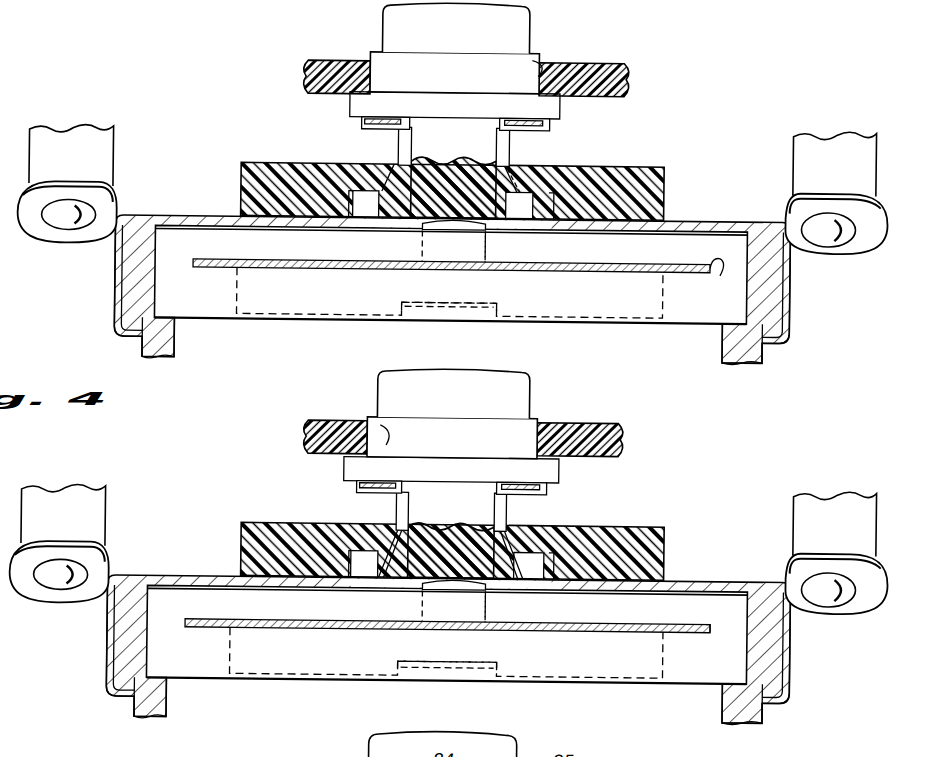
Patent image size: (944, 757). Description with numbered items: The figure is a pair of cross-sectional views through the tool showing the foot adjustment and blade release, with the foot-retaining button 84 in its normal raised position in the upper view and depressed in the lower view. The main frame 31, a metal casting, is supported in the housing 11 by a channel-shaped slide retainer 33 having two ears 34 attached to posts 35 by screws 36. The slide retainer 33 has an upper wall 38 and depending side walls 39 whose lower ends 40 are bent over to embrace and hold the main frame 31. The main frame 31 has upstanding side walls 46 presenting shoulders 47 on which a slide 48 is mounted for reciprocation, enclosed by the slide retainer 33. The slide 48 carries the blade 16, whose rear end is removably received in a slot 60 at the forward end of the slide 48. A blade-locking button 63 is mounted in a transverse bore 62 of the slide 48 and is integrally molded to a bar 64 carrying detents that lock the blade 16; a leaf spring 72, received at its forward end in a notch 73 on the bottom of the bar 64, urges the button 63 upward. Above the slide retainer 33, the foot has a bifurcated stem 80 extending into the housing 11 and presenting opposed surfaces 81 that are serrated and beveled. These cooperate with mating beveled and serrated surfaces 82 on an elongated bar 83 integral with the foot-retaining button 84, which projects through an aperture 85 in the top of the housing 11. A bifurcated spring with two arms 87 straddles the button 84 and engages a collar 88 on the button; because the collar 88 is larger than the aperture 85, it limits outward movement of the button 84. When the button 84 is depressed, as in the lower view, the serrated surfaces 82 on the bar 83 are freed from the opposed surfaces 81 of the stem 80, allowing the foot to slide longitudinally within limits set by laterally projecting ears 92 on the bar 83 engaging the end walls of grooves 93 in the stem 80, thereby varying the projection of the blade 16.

In FIG. 4, the housing 11 is at (631, 66).
In FIG. 5, the housing 11 is at (631, 431).
In FIG. 4, the blade 16 is at (585, 270).
In FIG. 5, the blade 16 is at (585, 631).
In FIG. 4, the main frame 31 is at (178, 348).
In FIG. 5, the main frame 31 is at (170, 710).
In FIG. 4, the channel-shaped slide retainer 33 is at (185, 215).
In FIG. 5, the channel-shaped slide retainer 33 is at (183, 575).
In FIG. 4, the ears 34 is at (75, 187).
In FIG. 5, the ears 34 is at (95, 548).
In FIG. 4, the posts 35 is at (80, 136).
In FIG. 5, the posts 35 is at (68, 506).
In FIG. 4, the screws 36 is at (60, 223).
In FIG. 5, the screws 36 is at (55, 586).
In FIG. 4, the upper wall 38 is at (282, 232).
In FIG. 5, the upper wall 38 is at (250, 596).
In FIG. 4, the side walls 39 is at (113, 297).
In FIG. 5, the side walls 39 is at (107, 652).
In FIG. 4, the lower ends 40 is at (127, 340).
In FIG. 5, the lower ends 40 is at (109, 699).
In FIG. 4, the upstanding side walls 46 is at (158, 362).
In FIG. 5, the upstanding side walls 46 is at (148, 721).
In FIG. 4, the shoulders 47 is at (158, 322).
In FIG. 5, the shoulders 47 is at (168, 681).
In FIG. 4, the slide 48 is at (285, 323).
In FIG. 5, the slide 48 is at (333, 683).
In FIG. 4, the slot 60 is at (716, 262).
In FIG. 5, the slot 60 is at (660, 604).
In FIG. 4, the transverse bore 62 is at (486, 250).
In FIG. 5, the transverse bore 62 is at (486, 608).
In FIG. 4, the blade-locking button 63 is at (440, 233).
In FIG. 5, the blade-locking button 63 is at (440, 593).
In FIG. 4, the bar 64 is at (610, 322).
In FIG. 5, the bar 64 is at (598, 684).
In FIG. 4, the leaf spring 72 is at (448, 312).
In FIG. 5, the leaf spring 72 is at (420, 685).
In FIG. 4, the notch 73 is at (505, 306).
In FIG. 5, the notch 73 is at (482, 685).
In FIG. 4, the bifurcated stem 80 is at (256, 165).
In FIG. 5, the bifurcated stem 80 is at (252, 526).
In FIG. 4, the opposed surfaces 81 is at (388, 166).
In FIG. 5, the opposed surfaces 81 is at (392, 530).
In FIG. 4, the beveled and serrated surfaces 82 is at (403, 166).
In FIG. 5, the beveled and serrated surfaces 82 is at (412, 527).
In FIG. 4, the elongated bar 83 is at (402, 226).
In FIG. 5, the elongated bar 83 is at (385, 592).
In FIG. 4, the foot-retaining button 84 is at (456, 27).
In FIG. 5, the foot-retaining button 84 is at (453, 393).
In FIG. 4, the aperture 85 is at (540, 62).
In FIG. 5, the aperture 85 is at (388, 430).
In FIG. 4, the arms 87 is at (500, 112).
In FIG. 5, the arms 87 is at (500, 480).
In FIG. 4, the collar 88 is at (540, 108).
In FIG. 5, the collar 88 is at (540, 473).
In FIG. 4, the ears 92 is at (375, 230).
In FIG. 5, the ears 92 is at (360, 580).
In FIG. 4, the grooves 93 is at (600, 176).
In FIG. 5, the grooves 93 is at (350, 548).